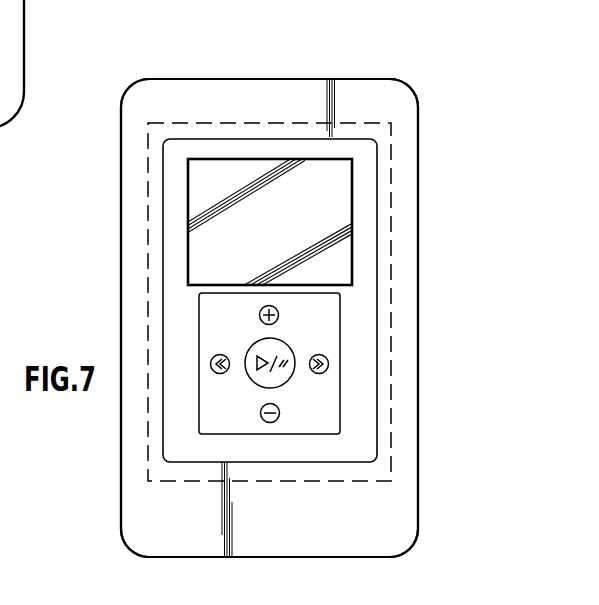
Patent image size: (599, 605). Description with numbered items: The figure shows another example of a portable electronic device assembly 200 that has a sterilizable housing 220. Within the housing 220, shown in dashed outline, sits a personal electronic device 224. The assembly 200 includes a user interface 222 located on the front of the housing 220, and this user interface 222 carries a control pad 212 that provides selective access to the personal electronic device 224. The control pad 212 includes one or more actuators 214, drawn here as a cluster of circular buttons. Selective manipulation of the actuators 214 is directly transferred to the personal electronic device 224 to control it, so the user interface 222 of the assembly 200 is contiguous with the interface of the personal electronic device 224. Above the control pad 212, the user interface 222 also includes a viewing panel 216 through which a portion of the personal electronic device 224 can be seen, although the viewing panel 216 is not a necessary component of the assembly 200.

The portable electronic device assembly 200 is at (336, 71).
The sterilizable housing 220 is at (420, 136).
The personal electronic device 224 is at (148, 228).
The user interface 222 is at (208, 137).
The viewing panel 216 is at (292, 231).
The control pad 212 is at (332, 329).
The actuators 214 is at (314, 373).